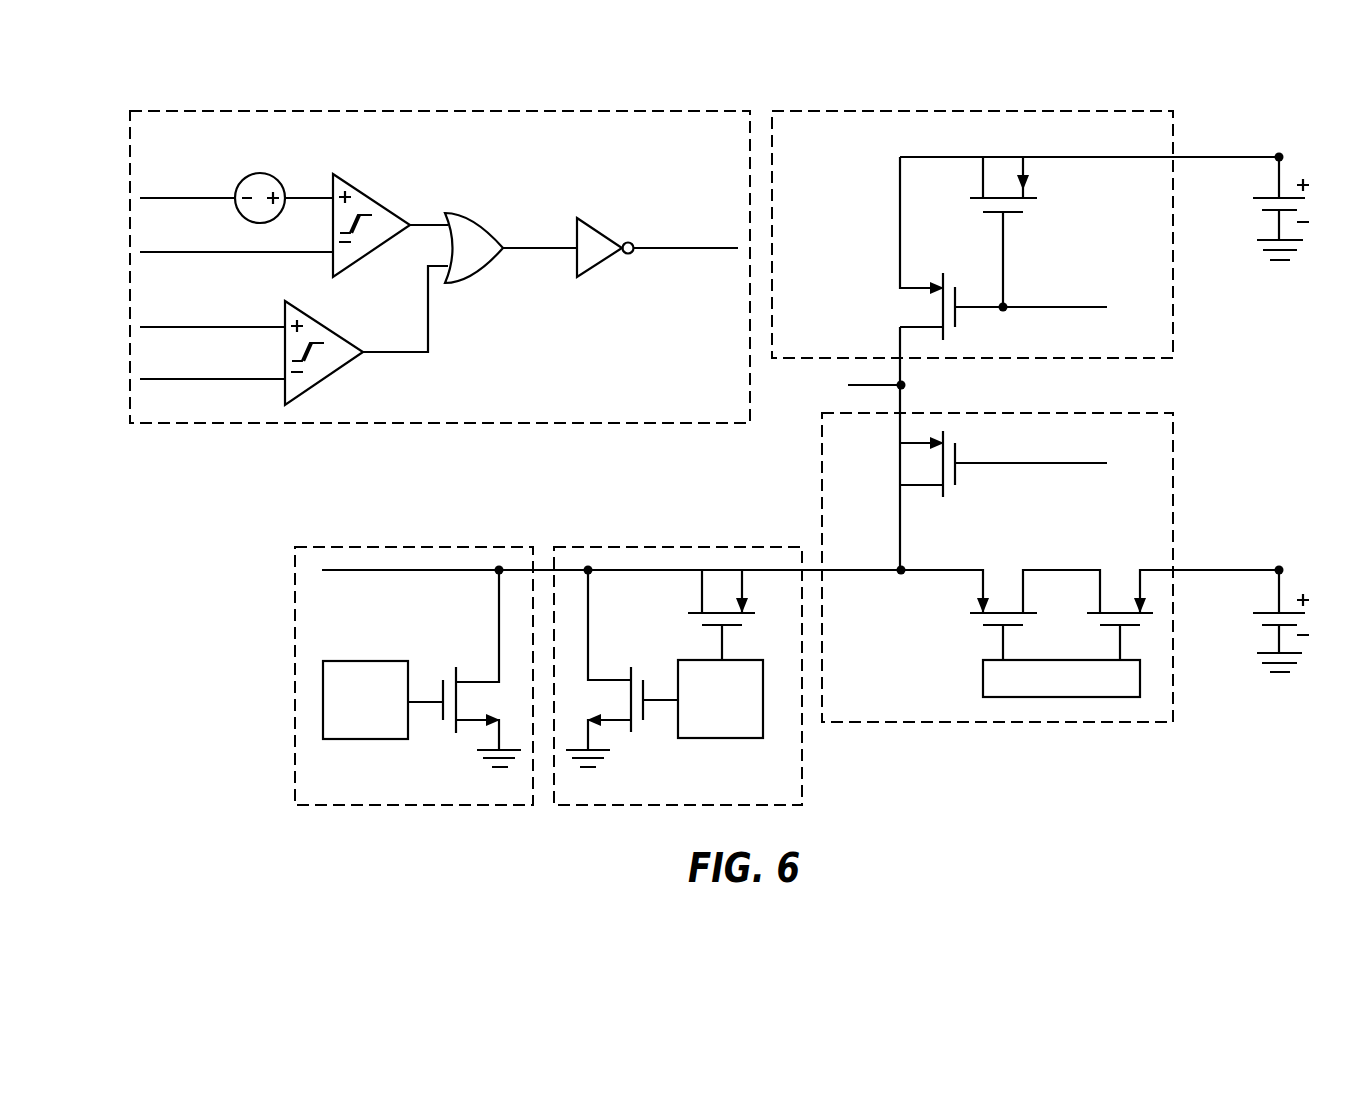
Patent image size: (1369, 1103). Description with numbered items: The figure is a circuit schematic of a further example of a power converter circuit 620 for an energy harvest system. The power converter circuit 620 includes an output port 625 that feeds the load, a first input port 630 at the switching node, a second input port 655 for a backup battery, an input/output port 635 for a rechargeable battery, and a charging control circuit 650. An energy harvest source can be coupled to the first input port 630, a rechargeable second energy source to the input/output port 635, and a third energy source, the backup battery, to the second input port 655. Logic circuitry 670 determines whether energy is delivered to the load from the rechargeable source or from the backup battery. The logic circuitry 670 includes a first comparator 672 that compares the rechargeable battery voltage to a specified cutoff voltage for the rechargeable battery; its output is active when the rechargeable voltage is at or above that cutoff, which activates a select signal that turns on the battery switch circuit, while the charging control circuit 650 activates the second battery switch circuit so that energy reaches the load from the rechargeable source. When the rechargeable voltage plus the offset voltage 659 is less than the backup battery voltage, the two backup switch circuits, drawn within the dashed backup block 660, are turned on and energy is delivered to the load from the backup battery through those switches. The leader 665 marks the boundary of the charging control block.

The power converter circuit 620 is at (207, 52).
The logic circuitry 670 is at (440, 110).
The offset voltage 659 is at (254, 174).
The first comparator 672 is at (323, 325).
The backup circuit 660 is at (975, 110).
The second input port 655 is at (1283, 155).
The output port 625 is at (905, 385).
The charging control circuit 650 is at (1000, 413).
The charging control boundary 665 is at (1173, 485).
The first input port 630 is at (499, 568).
The input/output port 635 is at (1283, 568).